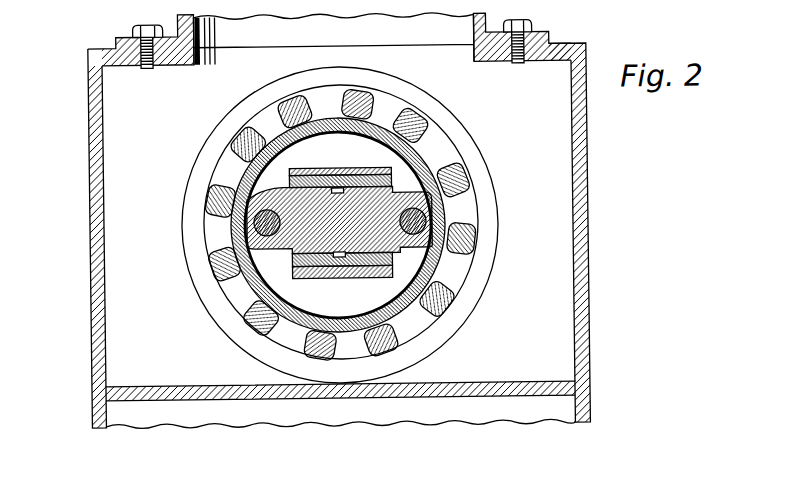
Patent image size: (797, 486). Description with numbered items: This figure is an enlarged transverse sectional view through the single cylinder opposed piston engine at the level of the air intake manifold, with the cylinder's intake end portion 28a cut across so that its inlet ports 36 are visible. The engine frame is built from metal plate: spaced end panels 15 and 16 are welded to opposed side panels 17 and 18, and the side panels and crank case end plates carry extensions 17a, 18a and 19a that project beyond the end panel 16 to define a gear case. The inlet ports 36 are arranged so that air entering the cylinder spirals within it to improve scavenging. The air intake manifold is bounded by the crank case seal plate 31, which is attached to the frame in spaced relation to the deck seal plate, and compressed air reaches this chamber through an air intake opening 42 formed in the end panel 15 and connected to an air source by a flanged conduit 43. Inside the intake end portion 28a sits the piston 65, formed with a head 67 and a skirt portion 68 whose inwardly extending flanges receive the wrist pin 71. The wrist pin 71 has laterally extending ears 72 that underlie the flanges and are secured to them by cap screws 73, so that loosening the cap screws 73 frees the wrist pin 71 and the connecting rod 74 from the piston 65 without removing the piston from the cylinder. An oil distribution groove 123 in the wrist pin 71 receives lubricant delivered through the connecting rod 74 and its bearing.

The end panel 15 is at (571, 44).
The end panel 16 is at (512, 382).
The side panel 17 is at (96, 350).
The extension 17a is at (102, 412).
The side panel 18 is at (586, 335).
The extension 18a is at (587, 408).
The extension 19a is at (520, 407).
The intake end portion 28a is at (432, 115).
The crank case seal plate 31 is at (555, 202).
The inlet ports 36 is at (445, 153).
The air intake opening 42 is at (277, 57).
The flanged conduit 43 is at (478, 42).
The piston 65 is at (240, 173).
The head 67 is at (340, 156).
The skirt portion 68 is at (250, 198).
The wrist pin 71 is at (355, 195).
The ears 72 is at (398, 203).
The cap screws 73 is at (263, 249).
The connecting rod 74 is at (328, 271).
The oil distribution groove 123 is at (343, 258).